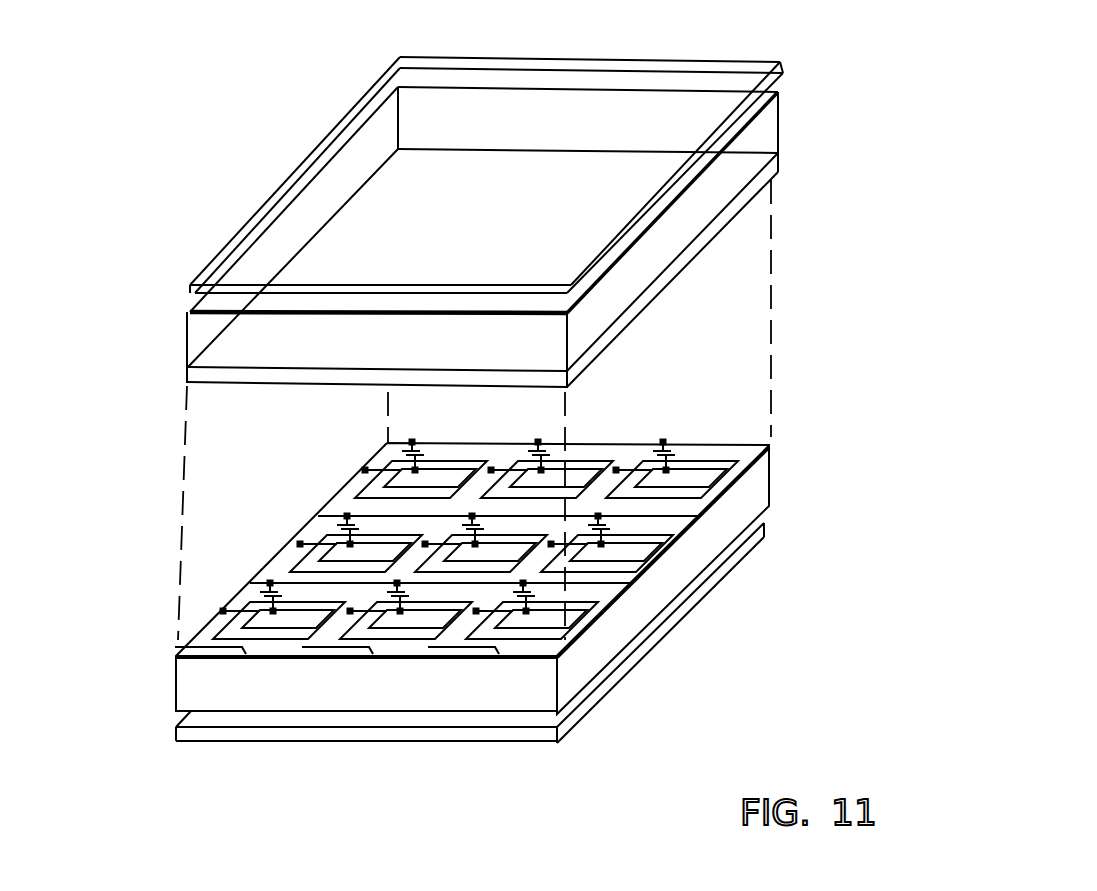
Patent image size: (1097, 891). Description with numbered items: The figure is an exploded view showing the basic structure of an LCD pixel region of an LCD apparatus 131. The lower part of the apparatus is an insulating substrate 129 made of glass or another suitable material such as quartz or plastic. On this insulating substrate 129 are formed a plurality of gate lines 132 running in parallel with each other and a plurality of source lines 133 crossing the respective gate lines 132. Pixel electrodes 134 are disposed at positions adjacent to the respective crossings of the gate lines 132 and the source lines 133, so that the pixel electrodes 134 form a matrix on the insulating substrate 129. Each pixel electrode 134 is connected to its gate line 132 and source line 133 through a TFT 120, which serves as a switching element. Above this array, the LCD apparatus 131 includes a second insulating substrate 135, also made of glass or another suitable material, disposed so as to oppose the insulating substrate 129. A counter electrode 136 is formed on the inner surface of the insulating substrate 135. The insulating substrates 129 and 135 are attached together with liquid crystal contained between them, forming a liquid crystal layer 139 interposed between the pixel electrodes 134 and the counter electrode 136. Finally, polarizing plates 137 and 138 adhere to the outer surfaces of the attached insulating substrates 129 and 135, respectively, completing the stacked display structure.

The LCD apparatus 131 is at (188, 148).
The counter electrode 136 is at (778, 158).
The polarizing plate 138 is at (190, 285).
The insulating substrate 135 is at (200, 323).
The liquid crystal layer 139 is at (708, 327).
The insulating substrate 129 is at (183, 690).
The polarizing plate 137 is at (175, 735).
The source lines 133 is at (633, 515).
The gate lines 132 is at (672, 518).
The pixel electrodes 134 is at (560, 620).
The TFTs 120 is at (515, 590).